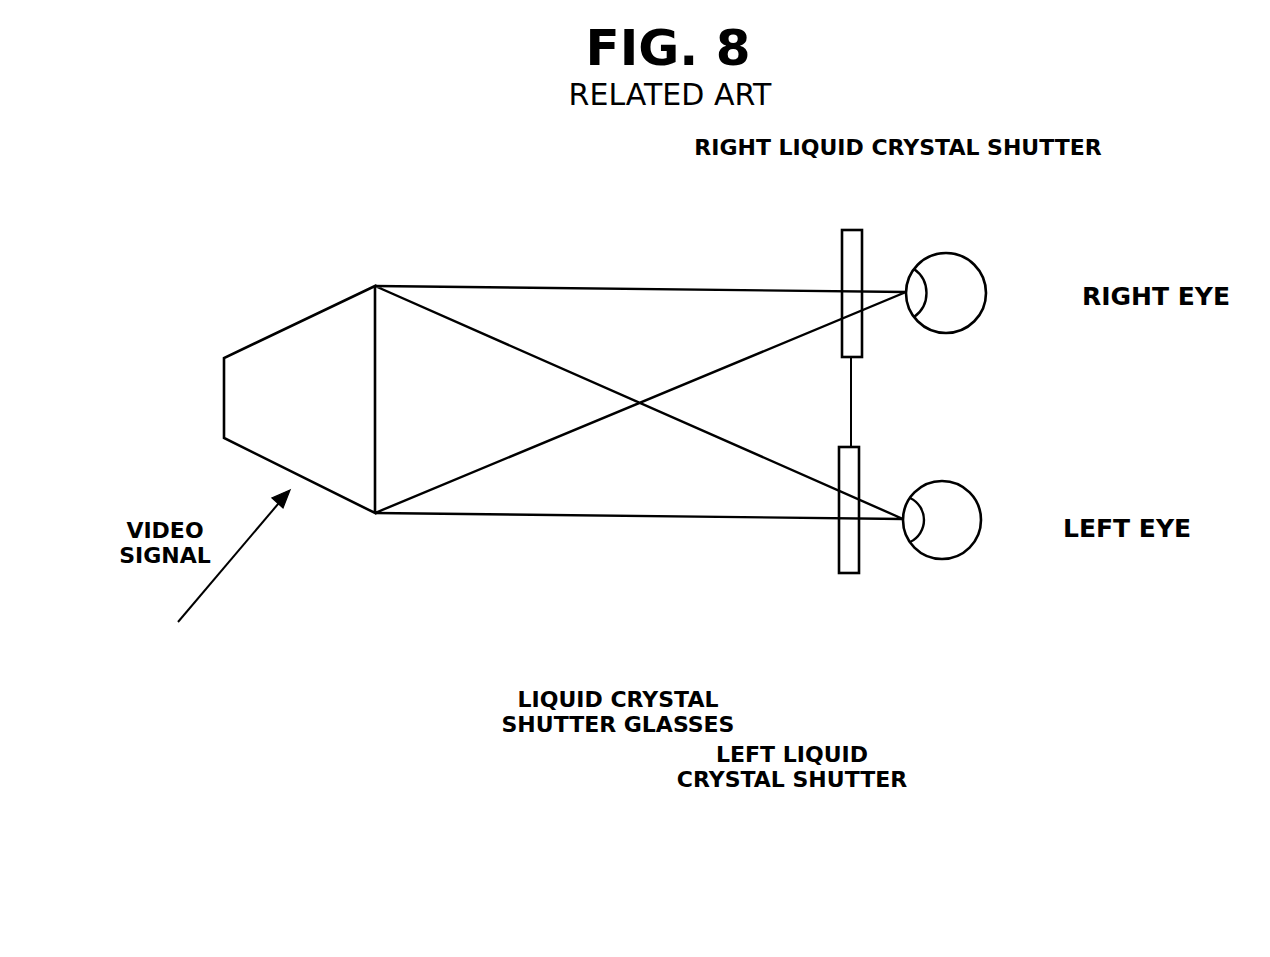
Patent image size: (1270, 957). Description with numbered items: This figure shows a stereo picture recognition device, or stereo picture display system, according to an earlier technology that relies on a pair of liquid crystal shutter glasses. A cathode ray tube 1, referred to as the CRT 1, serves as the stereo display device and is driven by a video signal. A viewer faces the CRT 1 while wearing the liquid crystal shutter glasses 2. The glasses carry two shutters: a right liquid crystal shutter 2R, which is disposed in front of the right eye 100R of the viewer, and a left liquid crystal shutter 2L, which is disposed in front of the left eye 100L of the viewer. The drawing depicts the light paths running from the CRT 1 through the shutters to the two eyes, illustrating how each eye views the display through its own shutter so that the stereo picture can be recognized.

The cathode ray tube 1 is at (290, 357).
The liquid crystal shutter glasses 2 is at (737, 437).
The right liquid crystal shutter 2R is at (830, 221).
The left liquid crystal shutter 2L is at (798, 532).
The right eye 100R is at (990, 293).
The left eye 100L is at (981, 520).